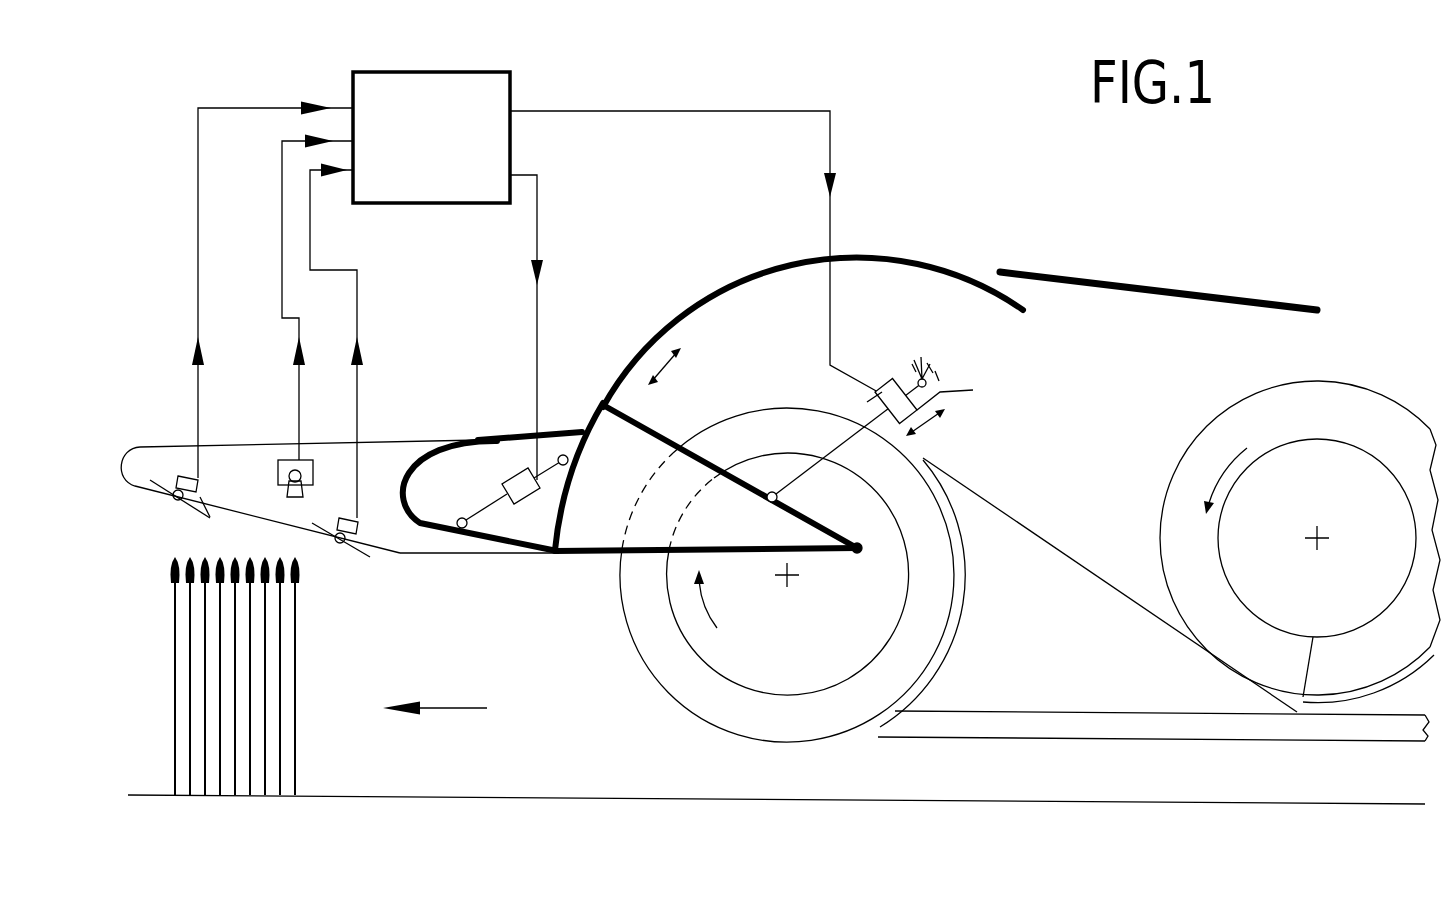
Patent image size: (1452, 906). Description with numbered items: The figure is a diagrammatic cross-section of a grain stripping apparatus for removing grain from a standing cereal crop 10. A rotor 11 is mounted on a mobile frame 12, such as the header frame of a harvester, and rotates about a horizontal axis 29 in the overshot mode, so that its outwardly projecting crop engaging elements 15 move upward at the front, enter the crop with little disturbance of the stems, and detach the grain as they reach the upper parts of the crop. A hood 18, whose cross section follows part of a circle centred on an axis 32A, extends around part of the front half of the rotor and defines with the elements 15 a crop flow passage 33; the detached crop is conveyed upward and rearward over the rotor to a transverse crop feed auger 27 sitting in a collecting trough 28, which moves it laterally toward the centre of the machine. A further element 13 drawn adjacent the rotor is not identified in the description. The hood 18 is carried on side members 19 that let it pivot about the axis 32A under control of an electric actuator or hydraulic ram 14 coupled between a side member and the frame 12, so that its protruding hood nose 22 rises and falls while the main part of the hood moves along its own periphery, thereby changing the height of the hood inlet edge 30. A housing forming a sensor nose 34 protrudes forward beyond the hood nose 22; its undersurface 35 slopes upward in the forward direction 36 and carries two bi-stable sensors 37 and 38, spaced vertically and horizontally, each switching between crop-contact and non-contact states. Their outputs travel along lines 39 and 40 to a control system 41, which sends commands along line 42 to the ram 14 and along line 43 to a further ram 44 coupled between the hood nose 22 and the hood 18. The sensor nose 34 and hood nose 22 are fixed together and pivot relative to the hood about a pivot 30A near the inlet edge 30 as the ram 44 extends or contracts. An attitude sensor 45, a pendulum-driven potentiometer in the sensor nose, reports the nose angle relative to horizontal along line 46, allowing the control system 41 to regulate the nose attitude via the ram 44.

The cereal crop 10 is at (175, 628).
The rotor 11 is at (697, 660).
The mobile frame 12 is at (1223, 757).
The web wrap segment 13 is at (890, 637).
The electric actuator or hydraulic ram 14 is at (883, 392).
The crop engaging elements 15 is at (650, 630).
The hood 18 is at (848, 252).
The side members 19 is at (808, 520).
The hood nose 22 is at (480, 433).
The transverse crop feed auger 27 is at (1312, 382).
The collecting trough 28 is at (1353, 700).
The horizontal axis 29 is at (787, 580).
The hood inlet edge 30 is at (560, 556).
The pivot 30A is at (567, 542).
The axis 32A is at (873, 560).
The crop flow passage 33 is at (753, 303).
The sensor nose 34 is at (237, 445).
The undersurface 35 is at (240, 515).
The forward direction 36 is at (447, 705).
The bi-stable sensor 37 is at (173, 500).
The bi-stable sensor 38 is at (348, 547).
The line 39 is at (195, 315).
The line 40 is at (357, 308).
The control system 41 is at (500, 87).
The line 42 is at (688, 110).
The line 43 is at (538, 212).
The further ram 44 is at (515, 503).
The attitude sensor 45 is at (278, 470).
The line 46 is at (300, 332).